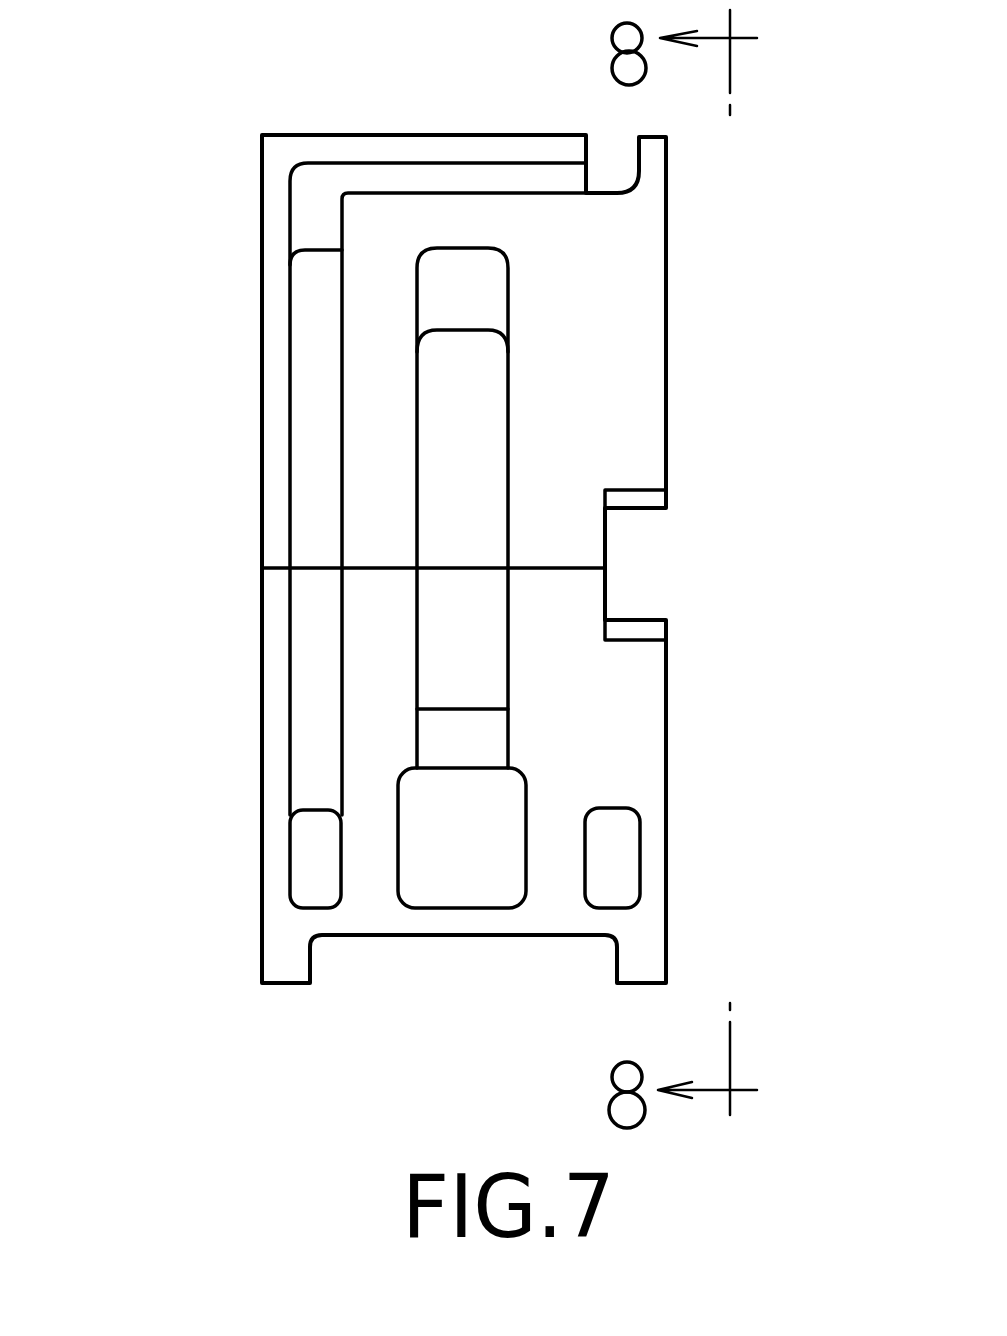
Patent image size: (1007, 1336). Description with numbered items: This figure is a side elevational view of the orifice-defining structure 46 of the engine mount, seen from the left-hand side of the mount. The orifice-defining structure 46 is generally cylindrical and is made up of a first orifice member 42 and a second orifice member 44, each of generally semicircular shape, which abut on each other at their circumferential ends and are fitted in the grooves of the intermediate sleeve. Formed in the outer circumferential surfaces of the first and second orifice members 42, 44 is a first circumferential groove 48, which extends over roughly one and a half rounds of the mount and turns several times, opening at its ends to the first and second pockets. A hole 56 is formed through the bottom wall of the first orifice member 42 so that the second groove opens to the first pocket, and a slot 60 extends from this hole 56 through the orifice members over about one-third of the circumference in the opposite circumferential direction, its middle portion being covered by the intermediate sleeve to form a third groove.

The first orifice member 42 is at (672, 883).
The second orifice member 44 is at (680, 243).
The orifice-defining structure 46 is at (192, 143).
The first circumferential groove 48 is at (290, 395).
The hole 56 is at (465, 727).
The slot 60 is at (508, 390).